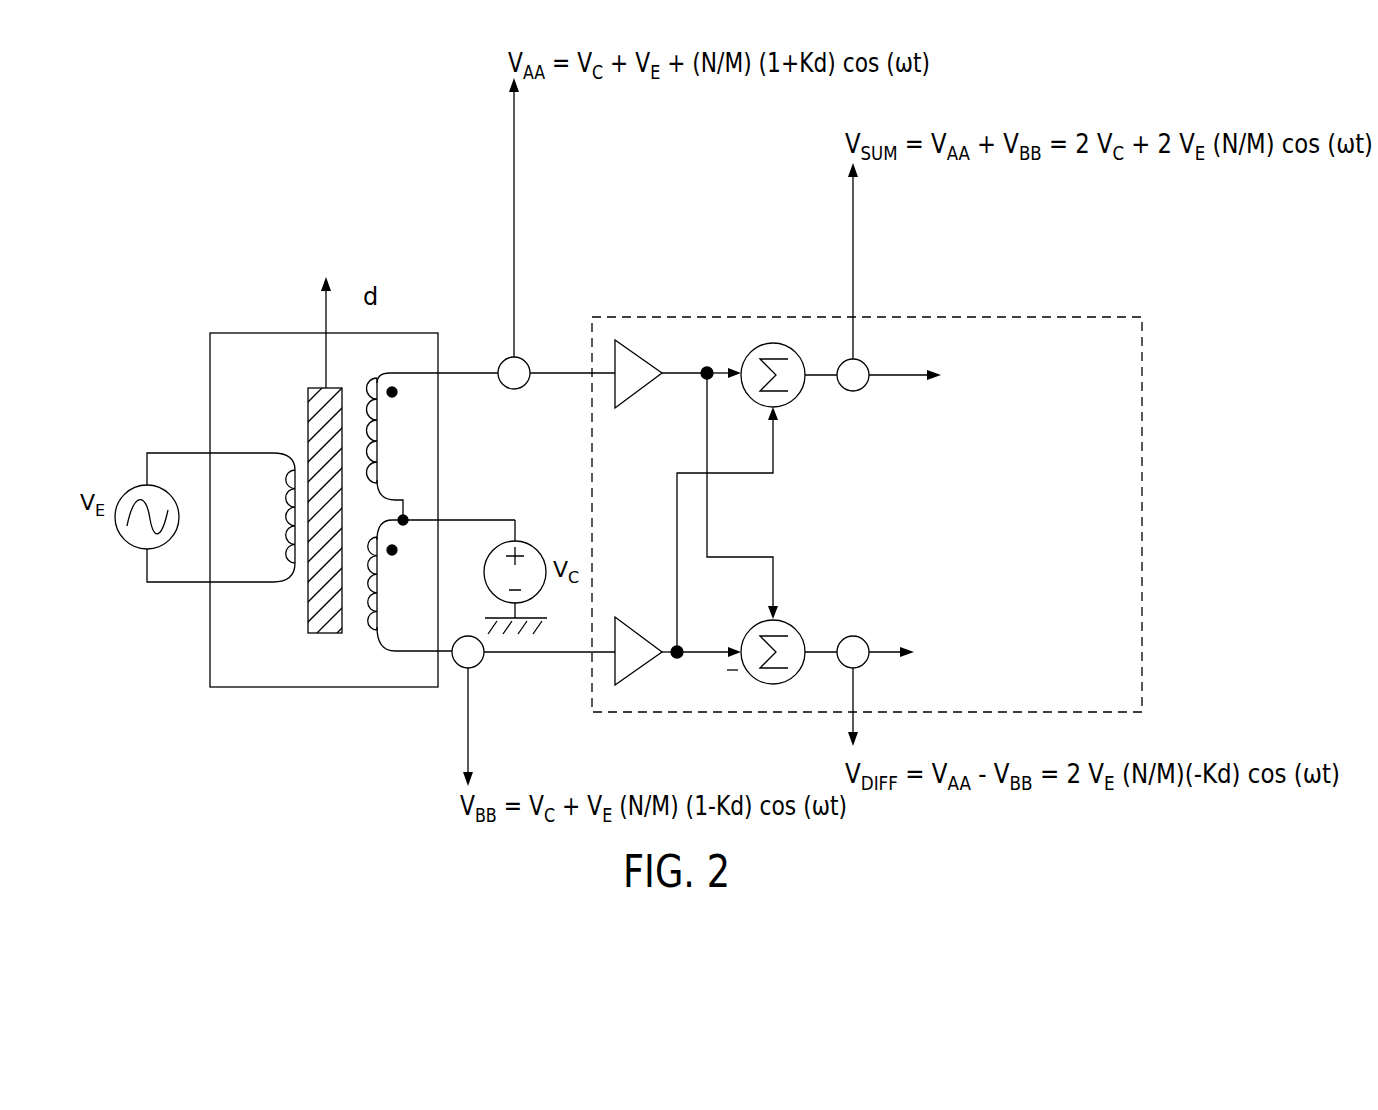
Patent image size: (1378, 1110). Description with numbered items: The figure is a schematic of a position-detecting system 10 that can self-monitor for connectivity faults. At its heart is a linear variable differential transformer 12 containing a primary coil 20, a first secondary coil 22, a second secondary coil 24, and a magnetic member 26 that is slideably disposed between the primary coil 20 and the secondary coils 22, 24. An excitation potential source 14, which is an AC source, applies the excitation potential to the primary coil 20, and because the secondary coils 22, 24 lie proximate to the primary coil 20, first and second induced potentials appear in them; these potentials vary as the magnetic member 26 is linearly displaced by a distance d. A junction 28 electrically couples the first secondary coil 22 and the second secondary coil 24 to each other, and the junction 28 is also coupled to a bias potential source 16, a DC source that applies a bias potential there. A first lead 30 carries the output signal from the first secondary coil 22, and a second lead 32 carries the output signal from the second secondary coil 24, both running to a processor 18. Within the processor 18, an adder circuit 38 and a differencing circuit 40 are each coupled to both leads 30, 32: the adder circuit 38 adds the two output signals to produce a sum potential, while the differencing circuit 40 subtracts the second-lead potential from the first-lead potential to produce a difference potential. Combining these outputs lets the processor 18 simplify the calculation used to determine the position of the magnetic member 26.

The system 10 is at (100, 252).
The linear variable differential transformer 12 is at (238, 333).
The excitation potential source 14 is at (128, 545).
The bias potential source 16 is at (538, 545).
The processor 18 is at (1025, 315).
The primary coil 20 is at (273, 492).
The first secondary coil 22 is at (377, 433).
The second secondary coil 24 is at (360, 617).
The magnetic member 26 is at (307, 592).
The junction 28 is at (406, 516).
The first lead 30 is at (463, 372).
The second lead 32 is at (455, 664).
The adder circuit 38 is at (790, 403).
The differencing circuit 40 is at (793, 625).